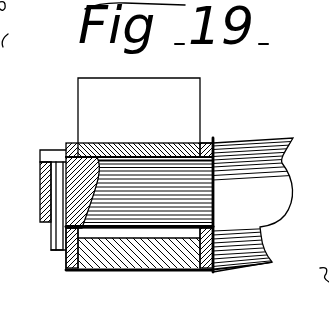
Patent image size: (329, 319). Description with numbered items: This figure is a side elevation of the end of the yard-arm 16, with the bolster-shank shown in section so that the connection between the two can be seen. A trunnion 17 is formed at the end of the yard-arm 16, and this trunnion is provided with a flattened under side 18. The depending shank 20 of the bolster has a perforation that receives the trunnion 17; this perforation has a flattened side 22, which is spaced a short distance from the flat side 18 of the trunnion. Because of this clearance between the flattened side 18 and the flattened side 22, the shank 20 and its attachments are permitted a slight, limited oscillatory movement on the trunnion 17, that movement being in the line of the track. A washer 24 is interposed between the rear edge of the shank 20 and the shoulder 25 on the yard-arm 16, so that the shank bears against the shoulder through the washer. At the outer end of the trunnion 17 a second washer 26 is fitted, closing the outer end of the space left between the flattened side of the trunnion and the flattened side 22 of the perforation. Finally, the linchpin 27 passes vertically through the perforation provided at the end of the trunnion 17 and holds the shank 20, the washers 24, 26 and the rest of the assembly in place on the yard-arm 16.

The yard-arm 16 is at (270, 187).
The trunnion 17 is at (181, 207).
The flattened under side 18 is at (143, 228).
The depending shank 20 is at (85, 115).
The flattened side 22 is at (96, 237).
The washer 24 is at (208, 267).
The shoulder 25 is at (213, 143).
The washer 26 is at (66, 257).
The linchpin 27 is at (53, 237).